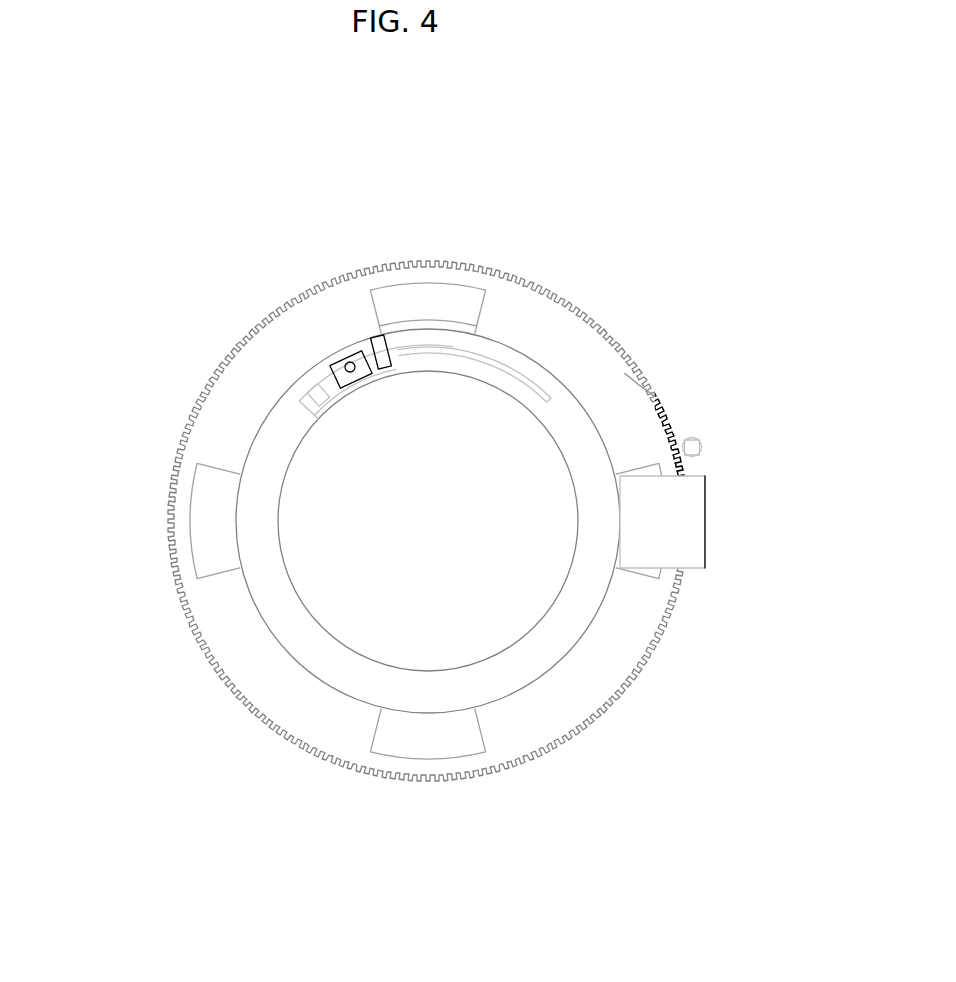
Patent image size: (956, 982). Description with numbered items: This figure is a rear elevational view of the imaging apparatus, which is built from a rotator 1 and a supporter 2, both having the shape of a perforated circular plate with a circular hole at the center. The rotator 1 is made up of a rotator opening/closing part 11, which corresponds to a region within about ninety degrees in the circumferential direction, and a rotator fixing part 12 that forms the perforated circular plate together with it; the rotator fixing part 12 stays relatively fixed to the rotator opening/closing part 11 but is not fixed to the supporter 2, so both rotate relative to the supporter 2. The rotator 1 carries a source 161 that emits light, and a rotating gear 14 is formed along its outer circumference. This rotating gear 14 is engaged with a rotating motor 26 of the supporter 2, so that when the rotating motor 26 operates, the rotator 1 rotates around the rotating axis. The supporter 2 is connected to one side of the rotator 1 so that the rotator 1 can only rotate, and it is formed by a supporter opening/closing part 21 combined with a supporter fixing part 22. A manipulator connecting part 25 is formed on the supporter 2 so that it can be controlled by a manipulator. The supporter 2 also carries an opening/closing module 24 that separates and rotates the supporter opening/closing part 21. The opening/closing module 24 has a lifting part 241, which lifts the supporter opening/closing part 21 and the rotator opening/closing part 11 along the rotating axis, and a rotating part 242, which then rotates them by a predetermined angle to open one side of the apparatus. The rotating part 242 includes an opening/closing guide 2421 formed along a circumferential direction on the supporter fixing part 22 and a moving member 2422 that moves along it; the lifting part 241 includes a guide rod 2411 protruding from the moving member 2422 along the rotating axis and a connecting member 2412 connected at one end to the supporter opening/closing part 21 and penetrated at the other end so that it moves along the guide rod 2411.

The rotator 1 is at (395, 557).
The rotator opening/closing part 11 is at (394, 557).
The rotator fixing part 12 is at (335, 735).
The rotating gear 14 is at (650, 390).
The source 161 is at (468, 322).
The supporter 2 is at (407, 480).
The supporter opening/closing part 21 is at (384, 559).
The supporter fixing part 22 is at (336, 680).
The opening/closing module 24 is at (310, 243).
The lifting part 241 is at (261, 270).
The guide rod 2411 is at (347, 364).
The connecting member 2412 is at (315, 378).
The rotating part 242 is at (406, 261).
The opening/closing guide 2421 is at (456, 350).
The moving member 2422 is at (372, 348).
The manipulator connecting part 25 is at (708, 520).
The rotating motor 26 is at (702, 440).